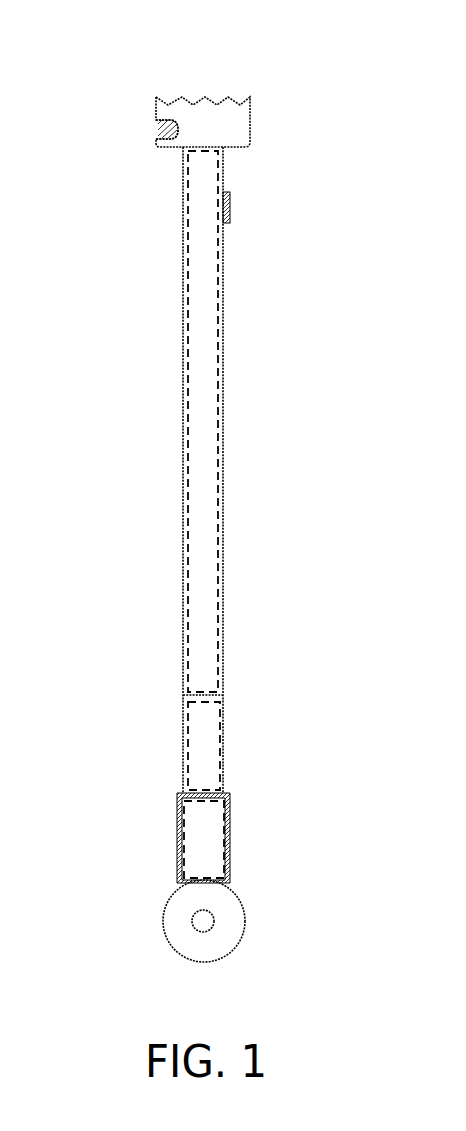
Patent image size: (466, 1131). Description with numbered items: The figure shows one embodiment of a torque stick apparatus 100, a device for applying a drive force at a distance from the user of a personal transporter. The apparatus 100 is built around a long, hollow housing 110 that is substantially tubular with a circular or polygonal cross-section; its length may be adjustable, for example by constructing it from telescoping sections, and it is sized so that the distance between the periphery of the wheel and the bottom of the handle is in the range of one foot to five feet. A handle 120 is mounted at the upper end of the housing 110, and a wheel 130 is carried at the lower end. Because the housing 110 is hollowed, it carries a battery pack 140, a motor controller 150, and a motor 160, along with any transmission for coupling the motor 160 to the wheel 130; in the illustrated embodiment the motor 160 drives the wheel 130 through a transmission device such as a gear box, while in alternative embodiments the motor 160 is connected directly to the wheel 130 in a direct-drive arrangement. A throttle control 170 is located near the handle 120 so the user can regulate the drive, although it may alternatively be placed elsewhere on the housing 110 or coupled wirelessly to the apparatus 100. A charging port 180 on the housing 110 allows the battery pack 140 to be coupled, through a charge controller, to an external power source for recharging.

The torque stick apparatus 100 is at (53, 29).
The housing 110 is at (226, 401).
The handle 120 is at (251, 118).
The wheel 130 is at (247, 915).
The battery pack 140 is at (220, 505).
The motor controller 150 is at (221, 748).
The motor 160 is at (231, 840).
The throttle control 170 is at (153, 128).
The charging port 180 is at (232, 206).